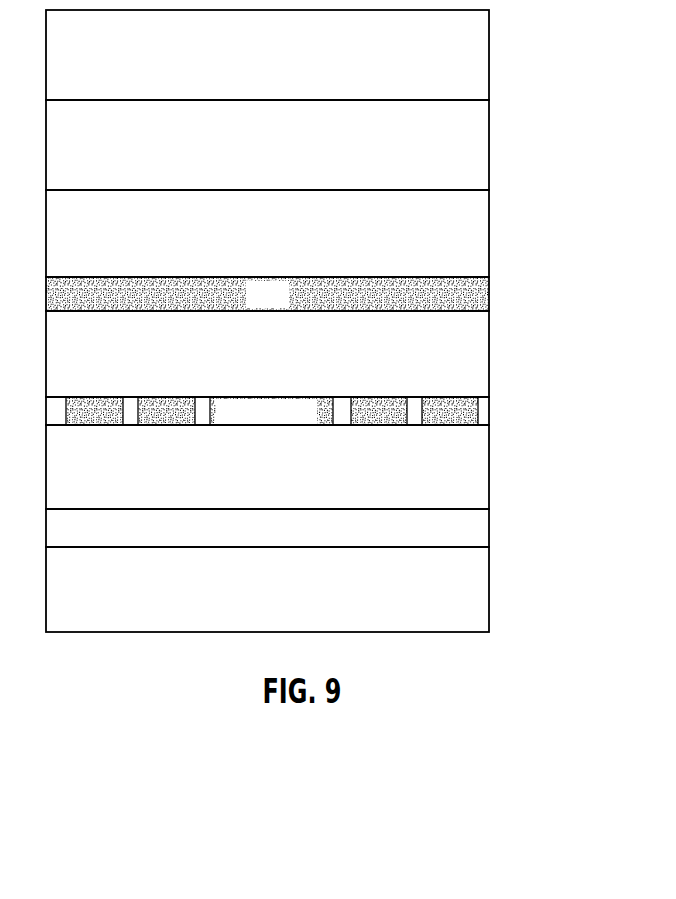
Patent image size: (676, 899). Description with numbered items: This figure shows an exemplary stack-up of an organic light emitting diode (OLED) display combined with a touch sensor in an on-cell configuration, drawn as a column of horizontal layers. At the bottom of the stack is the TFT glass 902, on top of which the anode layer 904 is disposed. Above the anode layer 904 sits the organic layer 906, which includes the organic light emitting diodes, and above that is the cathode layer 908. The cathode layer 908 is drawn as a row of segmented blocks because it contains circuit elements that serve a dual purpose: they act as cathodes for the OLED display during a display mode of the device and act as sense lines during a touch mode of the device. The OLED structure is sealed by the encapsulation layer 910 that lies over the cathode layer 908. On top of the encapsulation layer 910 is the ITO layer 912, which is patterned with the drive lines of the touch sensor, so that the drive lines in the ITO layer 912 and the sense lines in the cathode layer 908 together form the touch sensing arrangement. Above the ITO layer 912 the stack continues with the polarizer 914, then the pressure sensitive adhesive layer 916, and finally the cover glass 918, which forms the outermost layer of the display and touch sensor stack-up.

The cover glass 918 is at (482, 55).
The pressure sensitive adhesive layer 916 is at (482, 145).
The polarizer 914 is at (483, 235).
The ITO layer 912 is at (484, 297).
The encapsulation layer 910 is at (483, 355).
The cathode layer 908 is at (480, 412).
The organic layer 906 is at (483, 470).
The anode layer 904 is at (483, 528).
The TFT glass 902 is at (483, 588).